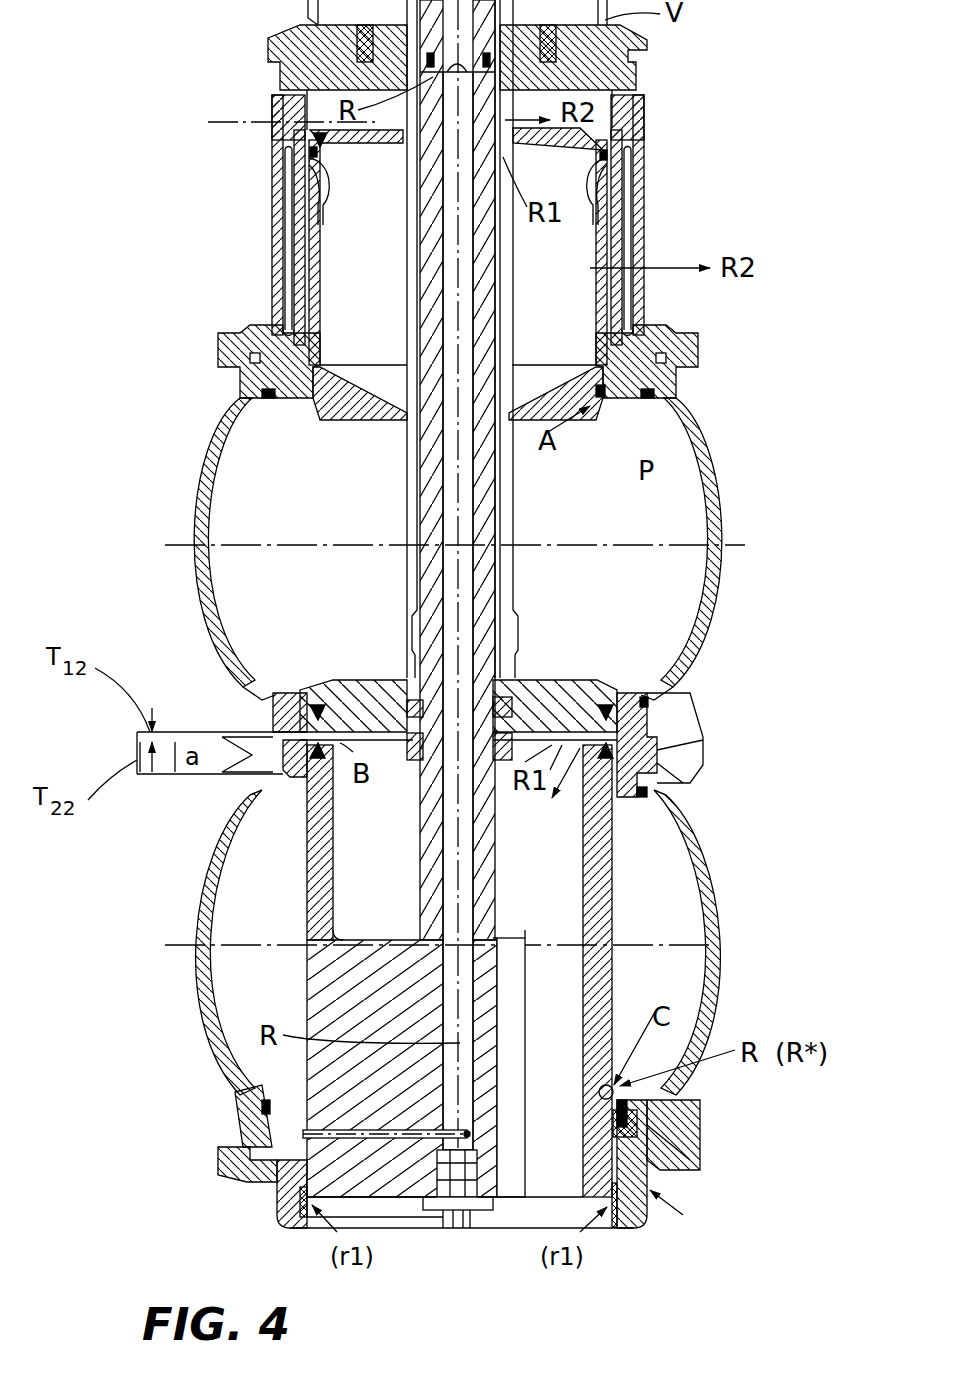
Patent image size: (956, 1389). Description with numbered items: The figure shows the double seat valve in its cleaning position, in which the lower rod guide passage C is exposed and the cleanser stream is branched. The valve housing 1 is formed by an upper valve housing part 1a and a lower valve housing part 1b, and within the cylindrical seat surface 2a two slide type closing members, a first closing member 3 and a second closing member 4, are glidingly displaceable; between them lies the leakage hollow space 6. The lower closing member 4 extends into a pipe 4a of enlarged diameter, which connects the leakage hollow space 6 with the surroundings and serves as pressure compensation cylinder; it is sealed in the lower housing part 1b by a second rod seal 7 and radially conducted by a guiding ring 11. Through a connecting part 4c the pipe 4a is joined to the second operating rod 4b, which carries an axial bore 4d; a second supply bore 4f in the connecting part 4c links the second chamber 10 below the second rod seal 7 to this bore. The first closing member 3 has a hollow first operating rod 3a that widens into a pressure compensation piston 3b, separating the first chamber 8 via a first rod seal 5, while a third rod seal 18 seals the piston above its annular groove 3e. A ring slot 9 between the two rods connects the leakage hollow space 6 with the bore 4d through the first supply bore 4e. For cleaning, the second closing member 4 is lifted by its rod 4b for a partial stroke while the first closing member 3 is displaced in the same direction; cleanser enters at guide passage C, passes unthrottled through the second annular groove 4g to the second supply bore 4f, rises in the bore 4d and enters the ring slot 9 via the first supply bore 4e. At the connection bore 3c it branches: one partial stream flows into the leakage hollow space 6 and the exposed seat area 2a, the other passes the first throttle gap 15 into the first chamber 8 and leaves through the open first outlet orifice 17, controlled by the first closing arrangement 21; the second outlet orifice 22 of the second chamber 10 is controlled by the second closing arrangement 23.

The valve housing 1 is at (708, 750).
The valve housing part 1a is at (677, 693).
The valve housing part 1b is at (713, 933).
The cylindrical seat surface 2a is at (650, 688).
The first closing member 3 is at (565, 680).
The first operating rod 3a is at (503, 595).
The pressure compensation piston 3b is at (633, 190).
The connection bore 3c is at (553, 103).
The annular groove 3e is at (605, 173).
The second closing member 4 is at (605, 776).
The pipe 4a is at (603, 843).
The second operating rod 4b is at (480, 890).
The connecting part 4c is at (505, 1003).
The bore 4d is at (460, 499).
The first supply bore 4e is at (407, 130).
The second supply bore 4f is at (445, 1115).
The second annular groove 4g is at (607, 1100).
The first rod seal 5 is at (632, 398).
The leakage hollow space 6 is at (376, 842).
The second rod seal 7 is at (637, 1128).
The first chamber 8 is at (640, 212).
The ring slot 9 is at (495, 522).
The second chamber 10 is at (610, 1138).
The guiding ring 11 is at (610, 1183).
The first throttle gap 15 is at (647, 90).
The first outlet orifice 17 is at (637, 279).
The third rod seal 18 is at (638, 140).
The first closing arrangement 21 is at (703, 226).
The second outlet orifice 22 is at (650, 1175).
The second closing arrangement 23 is at (690, 1200).